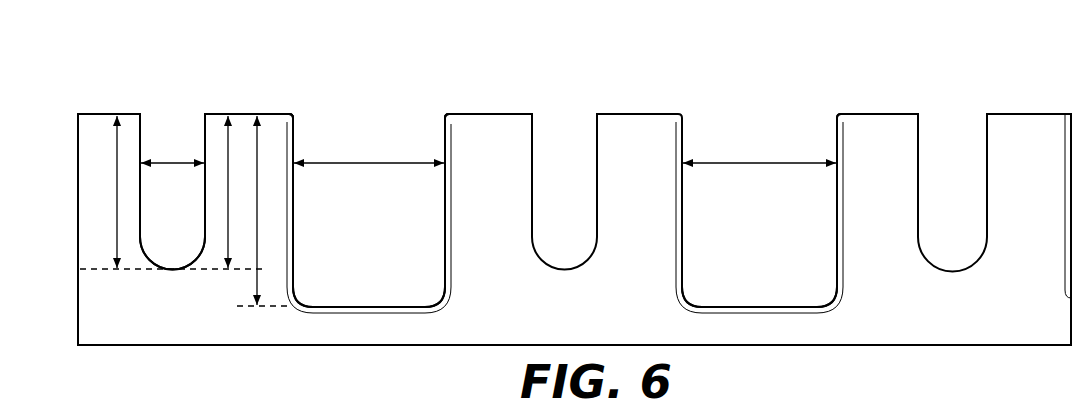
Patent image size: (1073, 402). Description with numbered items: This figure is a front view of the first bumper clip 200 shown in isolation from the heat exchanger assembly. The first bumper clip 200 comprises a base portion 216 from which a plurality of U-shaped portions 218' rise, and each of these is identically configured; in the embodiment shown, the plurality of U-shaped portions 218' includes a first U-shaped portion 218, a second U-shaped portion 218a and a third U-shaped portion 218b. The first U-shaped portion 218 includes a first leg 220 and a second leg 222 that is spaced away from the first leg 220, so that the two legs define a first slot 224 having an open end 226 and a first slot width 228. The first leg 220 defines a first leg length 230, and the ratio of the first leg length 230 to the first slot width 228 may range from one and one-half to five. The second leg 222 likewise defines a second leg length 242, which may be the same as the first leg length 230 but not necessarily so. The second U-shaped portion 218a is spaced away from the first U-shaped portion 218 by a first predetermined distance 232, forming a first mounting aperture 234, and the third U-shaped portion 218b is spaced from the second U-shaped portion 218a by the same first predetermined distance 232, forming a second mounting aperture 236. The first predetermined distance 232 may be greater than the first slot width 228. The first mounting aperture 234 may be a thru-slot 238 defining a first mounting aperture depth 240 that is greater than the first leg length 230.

The first bumper clip 200 is at (636, 76).
The base portion 216 is at (400, 347).
The first U-shaped portion 218 is at (109, 175).
The plurality of U-shaped portions 218' is at (561, 159).
The second U-shaped portion 218a is at (470, 112).
The third U-shaped portion 218b is at (1020, 103).
The first leg 220 is at (82, 112).
The second leg 222 is at (263, 112).
The first slot 224 is at (164, 138).
The open end 226 is at (201, 127).
The first slot width 228 is at (177, 165).
The first leg length 230 is at (116, 190).
The first predetermined distance 232 is at (381, 166).
The first mounting aperture 234 is at (380, 140).
The second mounting aperture 236 is at (760, 133).
The thru-slot 238 is at (425, 237).
The first mounting aperture depth 240 is at (255, 291).
The second leg length 242 is at (232, 228).